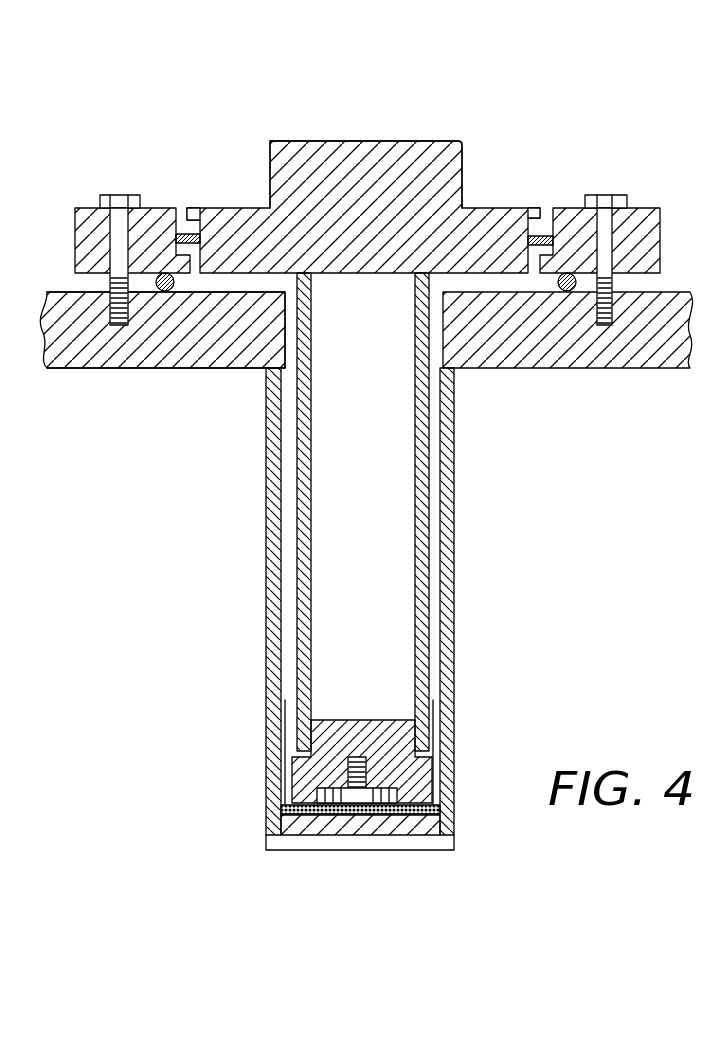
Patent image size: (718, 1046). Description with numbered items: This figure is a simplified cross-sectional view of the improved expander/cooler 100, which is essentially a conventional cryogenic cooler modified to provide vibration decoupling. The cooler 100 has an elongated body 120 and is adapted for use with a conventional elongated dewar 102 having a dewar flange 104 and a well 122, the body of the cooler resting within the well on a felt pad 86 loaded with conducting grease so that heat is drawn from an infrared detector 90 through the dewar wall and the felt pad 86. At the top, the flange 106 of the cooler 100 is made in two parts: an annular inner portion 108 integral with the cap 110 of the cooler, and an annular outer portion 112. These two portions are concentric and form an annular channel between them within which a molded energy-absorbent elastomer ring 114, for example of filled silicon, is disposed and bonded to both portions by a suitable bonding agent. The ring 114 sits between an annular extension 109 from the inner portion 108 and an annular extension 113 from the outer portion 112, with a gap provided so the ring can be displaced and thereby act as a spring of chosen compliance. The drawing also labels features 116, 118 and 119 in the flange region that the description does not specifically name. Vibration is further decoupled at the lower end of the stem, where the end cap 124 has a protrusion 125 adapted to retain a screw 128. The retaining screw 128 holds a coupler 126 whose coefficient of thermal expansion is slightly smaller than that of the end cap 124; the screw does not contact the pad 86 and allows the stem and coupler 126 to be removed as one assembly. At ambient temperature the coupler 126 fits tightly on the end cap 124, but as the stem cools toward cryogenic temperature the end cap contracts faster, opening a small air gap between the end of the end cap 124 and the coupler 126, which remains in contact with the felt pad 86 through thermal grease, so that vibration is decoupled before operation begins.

The cooler 100 is at (516, 70).
The dewar 102 is at (233, 370).
The dewar flange 104 is at (102, 368).
The flange 106 is at (507, 197).
The annular inner portion 108 is at (220, 207).
The annular extension 109 is at (187, 207).
The cap 110 is at (483, 140).
The annular outer portion 112 is at (650, 207).
The annular extension 113 is at (543, 278).
The elastomer ring 114 is at (176, 238).
The bolt 116 is at (118, 195).
The bolt 118 is at (612, 195).
The set screw 119 is at (160, 291).
The elongated body 120 is at (418, 457).
The well 122 is at (453, 545).
The end cap 124 is at (420, 750).
The protrusion 125 is at (420, 760).
The coupler 126 is at (284, 773).
The retaining screw 128 is at (300, 795).
The felt pad 86 is at (280, 809).
The infrared detector 90 is at (433, 838).